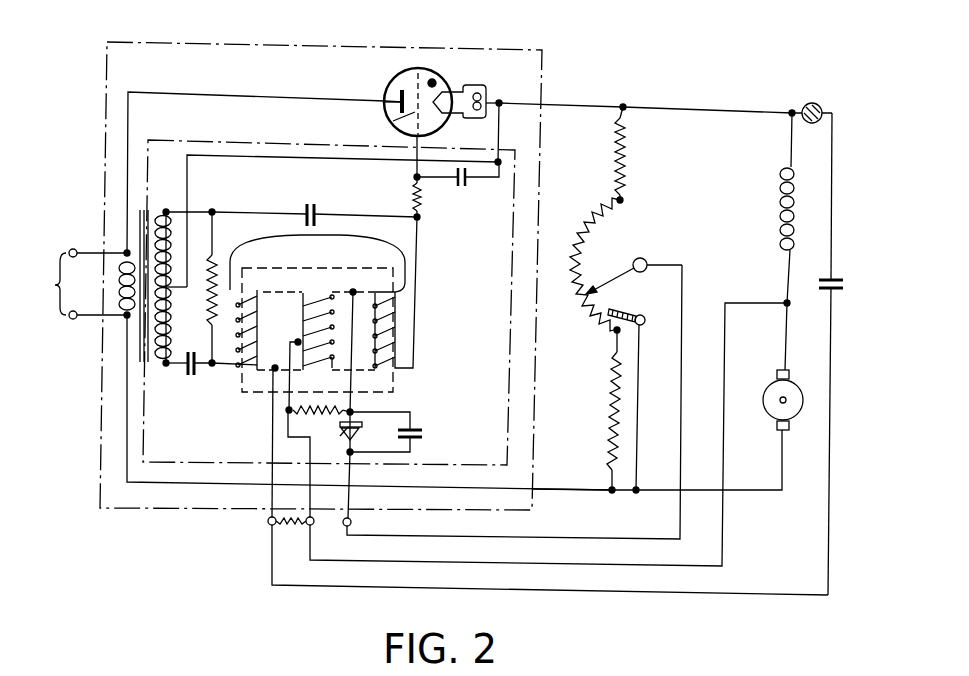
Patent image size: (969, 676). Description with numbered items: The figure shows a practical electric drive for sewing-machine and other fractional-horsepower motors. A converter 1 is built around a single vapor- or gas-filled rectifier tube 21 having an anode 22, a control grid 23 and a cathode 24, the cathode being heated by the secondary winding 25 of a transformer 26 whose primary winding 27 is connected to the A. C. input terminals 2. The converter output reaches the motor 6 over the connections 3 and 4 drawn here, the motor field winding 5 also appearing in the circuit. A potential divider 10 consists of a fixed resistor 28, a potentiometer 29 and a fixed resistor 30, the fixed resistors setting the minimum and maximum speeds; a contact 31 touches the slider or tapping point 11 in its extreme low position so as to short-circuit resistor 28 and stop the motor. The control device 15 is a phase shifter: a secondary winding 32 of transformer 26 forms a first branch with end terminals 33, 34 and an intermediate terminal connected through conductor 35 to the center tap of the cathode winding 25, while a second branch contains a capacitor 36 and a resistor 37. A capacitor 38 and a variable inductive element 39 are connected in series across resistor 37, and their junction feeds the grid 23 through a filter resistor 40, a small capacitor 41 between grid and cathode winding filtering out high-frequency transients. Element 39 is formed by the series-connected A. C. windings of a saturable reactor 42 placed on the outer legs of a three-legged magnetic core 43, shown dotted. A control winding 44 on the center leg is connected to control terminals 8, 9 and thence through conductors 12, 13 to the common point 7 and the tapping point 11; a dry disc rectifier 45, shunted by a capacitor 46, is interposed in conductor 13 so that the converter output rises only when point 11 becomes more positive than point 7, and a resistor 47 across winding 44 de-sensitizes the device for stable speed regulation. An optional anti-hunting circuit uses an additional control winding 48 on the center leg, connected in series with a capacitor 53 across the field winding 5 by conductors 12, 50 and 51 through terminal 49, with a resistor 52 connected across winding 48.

The converter 1 is at (330, 47).
The A. C. input terminals 2 is at (87, 284).
The supply line 3 is at (642, 106).
The return line 4 is at (592, 492).
The motor field winding 5 is at (781, 216).
The motor 6 is at (770, 382).
The common point 7 is at (785, 302).
The control terminal 8 is at (314, 524).
The control terminal 9 is at (352, 522).
The potential divider 10 is at (643, 233).
The slider or tapping point 11 is at (610, 282).
The conductor 12 is at (485, 566).
The conductor 13 is at (527, 540).
The control device 15 is at (280, 142).
The rectifier tube 21 is at (396, 70).
The anode 22 is at (398, 93).
The control grid 23 is at (393, 121).
The cathode 24 is at (441, 91).
The secondary winding 25 is at (486, 90).
The transformer 26 is at (140, 232).
The primary winding 27 is at (120, 282).
The fixed resistor 28 is at (612, 420).
The potentiometer 29 is at (590, 222).
The fixed resistor 30 is at (616, 160).
The contact 31 is at (630, 312).
The secondary winding 32 is at (168, 294).
The end terminal 33 is at (167, 210).
The end terminal 34 is at (166, 366).
The conductor 35 is at (243, 158).
The capacitor 36 is at (195, 377).
The resistor 37 is at (214, 260).
The capacitor 38 is at (307, 207).
The variable inductive element 39 is at (237, 318).
The filter resistor 40 is at (412, 190).
The small capacitor 41 is at (466, 183).
The saturable reactor 42 is at (287, 333).
The three-legged magnetic core 43 is at (340, 267).
The control winding 44 is at (302, 293).
The dry disc rectifier 45 is at (340, 435).
The capacitor 46 is at (424, 430).
The resistor 47 is at (322, 410).
The additional control winding 48 is at (308, 369).
The terminal 49 is at (806, 105).
The conductor 50 is at (530, 593).
The conductor 51 is at (828, 110).
The resistor 52 is at (287, 460).
The capacitor 53 is at (832, 279).